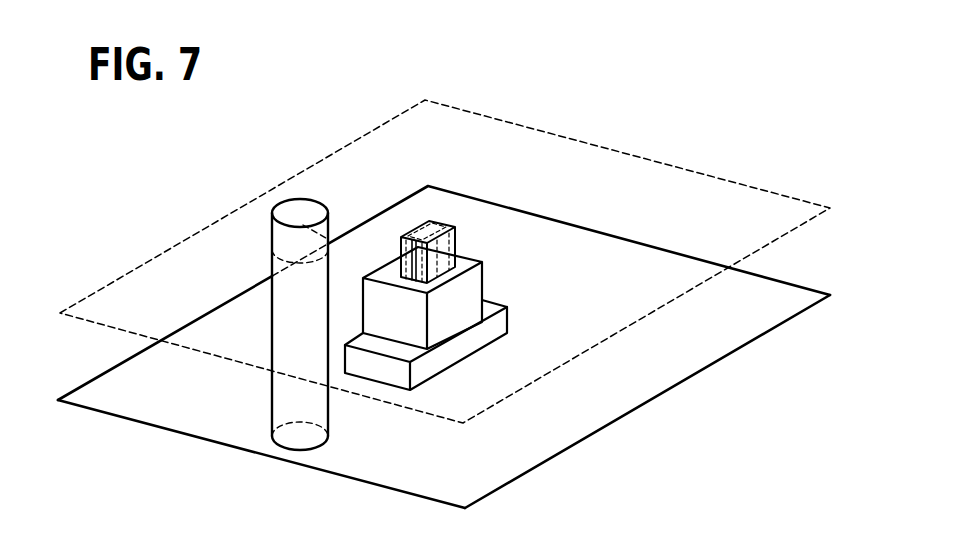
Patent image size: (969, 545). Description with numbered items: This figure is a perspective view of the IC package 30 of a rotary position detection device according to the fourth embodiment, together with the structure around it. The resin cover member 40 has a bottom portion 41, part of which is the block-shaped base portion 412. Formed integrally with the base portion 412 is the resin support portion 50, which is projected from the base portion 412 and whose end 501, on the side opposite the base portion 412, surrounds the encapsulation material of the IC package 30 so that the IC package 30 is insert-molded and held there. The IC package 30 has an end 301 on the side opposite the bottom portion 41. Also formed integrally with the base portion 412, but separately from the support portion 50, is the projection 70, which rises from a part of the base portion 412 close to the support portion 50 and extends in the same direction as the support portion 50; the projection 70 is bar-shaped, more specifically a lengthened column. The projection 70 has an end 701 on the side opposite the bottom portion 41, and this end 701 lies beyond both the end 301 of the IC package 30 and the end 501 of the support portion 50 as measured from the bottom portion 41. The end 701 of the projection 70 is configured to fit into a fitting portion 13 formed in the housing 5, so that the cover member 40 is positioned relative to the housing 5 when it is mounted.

The housing 5 is at (143, 320).
The fitting portion 13 is at (303, 225).
The IC package 30 is at (428, 223).
The cover member 40 is at (185, 415).
The bottom portion 41 is at (225, 430).
The support portion 50 is at (458, 325).
The projection 70 is at (283, 332).
The end of the IC package 301 is at (428, 223).
The base portion 412 is at (418, 475).
The end of the support portion 501 is at (429, 222).
The end of the projection 701 is at (292, 213).